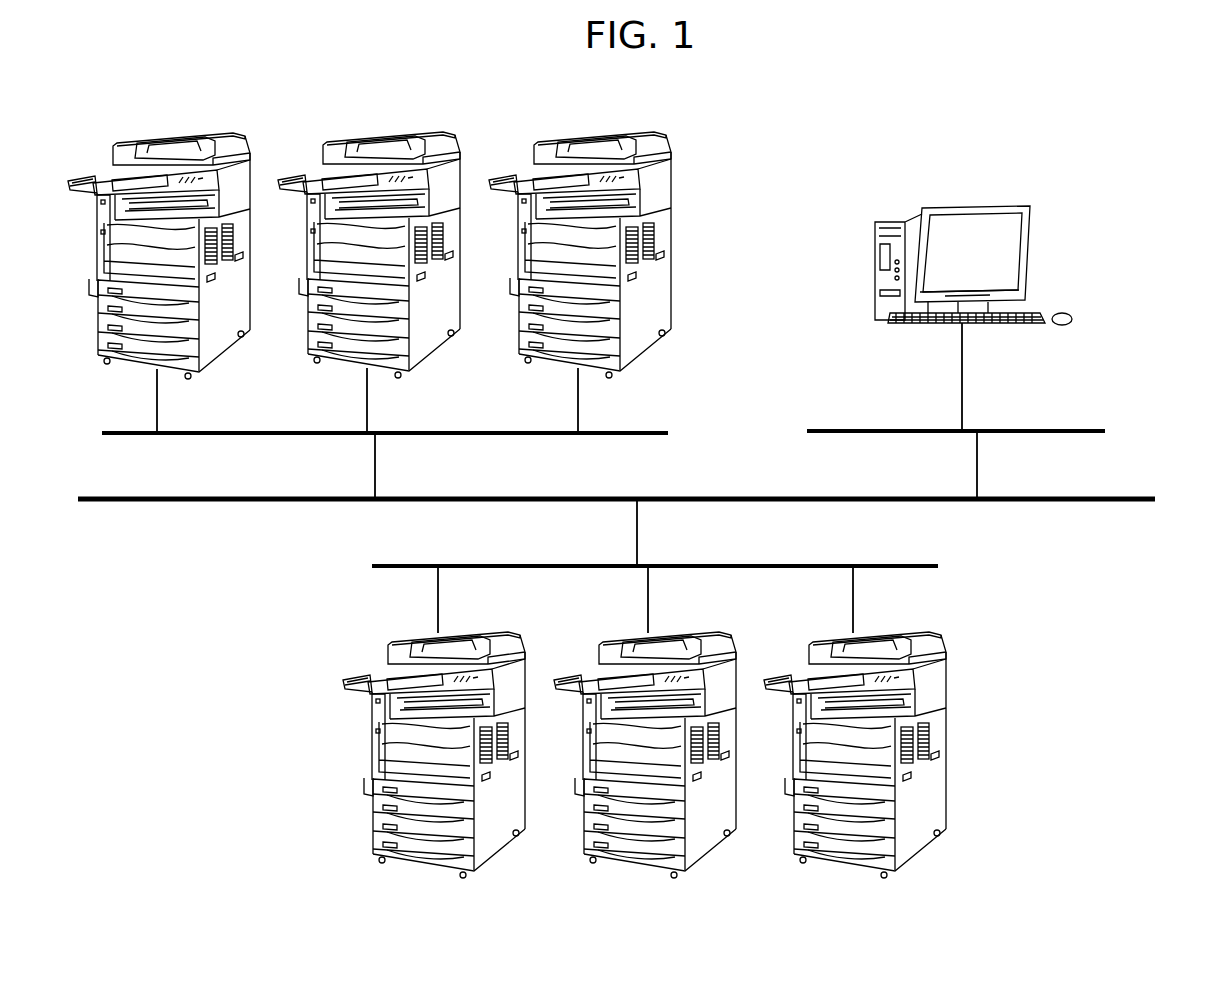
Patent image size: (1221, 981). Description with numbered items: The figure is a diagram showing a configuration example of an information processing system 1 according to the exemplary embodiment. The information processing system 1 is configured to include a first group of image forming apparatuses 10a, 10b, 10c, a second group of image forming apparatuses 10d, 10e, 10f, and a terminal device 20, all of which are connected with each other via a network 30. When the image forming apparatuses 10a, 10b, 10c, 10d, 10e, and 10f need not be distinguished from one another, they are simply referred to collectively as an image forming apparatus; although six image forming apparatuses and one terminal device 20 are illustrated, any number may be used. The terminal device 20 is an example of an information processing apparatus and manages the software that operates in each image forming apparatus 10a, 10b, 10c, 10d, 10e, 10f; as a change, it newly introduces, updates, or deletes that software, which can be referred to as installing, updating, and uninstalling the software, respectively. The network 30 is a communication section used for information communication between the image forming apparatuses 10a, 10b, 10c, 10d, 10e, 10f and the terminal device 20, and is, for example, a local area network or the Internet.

The information processing system 1 is at (1097, 158).
The image forming apparatus 10a is at (180, 131).
The image forming apparatus 10b is at (390, 130).
The image forming apparatus 10c is at (600, 130).
The image forming apparatus 10d is at (432, 866).
The image forming apparatus 10e is at (642, 866).
The image forming apparatus 10f is at (850, 866).
The terminal device 20 is at (1032, 238).
The network 30 is at (1108, 501).